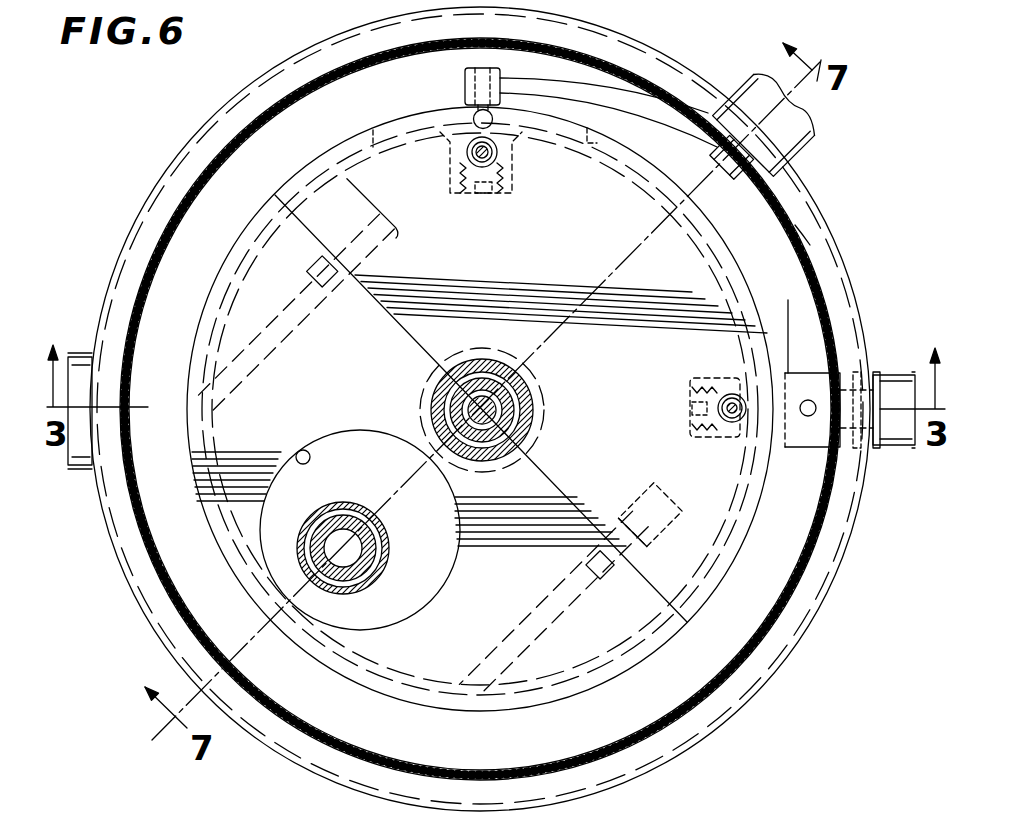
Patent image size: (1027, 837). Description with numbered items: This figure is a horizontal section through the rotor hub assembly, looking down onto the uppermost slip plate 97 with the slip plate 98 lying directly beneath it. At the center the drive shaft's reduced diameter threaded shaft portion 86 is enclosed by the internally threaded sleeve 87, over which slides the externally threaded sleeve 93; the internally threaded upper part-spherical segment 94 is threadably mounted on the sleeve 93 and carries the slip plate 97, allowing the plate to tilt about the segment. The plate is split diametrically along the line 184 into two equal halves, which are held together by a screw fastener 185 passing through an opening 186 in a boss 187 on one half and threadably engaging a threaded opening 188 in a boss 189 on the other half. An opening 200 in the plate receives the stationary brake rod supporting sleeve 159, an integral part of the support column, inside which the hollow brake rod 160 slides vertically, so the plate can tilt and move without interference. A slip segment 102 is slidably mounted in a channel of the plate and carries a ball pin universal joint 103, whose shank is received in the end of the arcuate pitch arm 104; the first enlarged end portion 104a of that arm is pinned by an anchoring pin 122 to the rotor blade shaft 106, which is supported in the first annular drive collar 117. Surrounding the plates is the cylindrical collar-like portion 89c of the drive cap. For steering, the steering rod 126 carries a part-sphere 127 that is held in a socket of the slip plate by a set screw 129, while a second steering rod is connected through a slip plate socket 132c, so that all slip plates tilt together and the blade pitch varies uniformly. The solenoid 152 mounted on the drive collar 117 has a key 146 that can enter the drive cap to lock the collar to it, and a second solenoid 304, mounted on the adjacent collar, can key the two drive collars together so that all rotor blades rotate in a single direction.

The threaded shaft portion 86 is at (527, 392).
The internally threaded sleeve 87 is at (510, 377).
The externally threaded sleeve 93 is at (470, 373).
The upper part-spherical segment 94 is at (527, 417).
The slip plate 97 is at (428, 836).
The slip plate 98 is at (717, 592).
The slip segment 102 is at (632, 108).
The universal joint 103 is at (467, 118).
The arcuate pitch arm 104 is at (812, 140).
The first enlarged end portion 104a is at (815, 377).
The rotor blade shaft 106 is at (897, 423).
The first annular drive collar 117 is at (848, 257).
The anchoring pin 122 is at (808, 417).
The steering rod 126 is at (725, 400).
The part-sphere 127 is at (733, 447).
The set screw 129 is at (692, 408).
The slip plate socket 132c is at (510, 178).
The key 146 is at (726, 178).
The solenoid 152 is at (754, 68).
The brake rod supporting sleeve 159 is at (355, 522).
The brake rod 160 is at (383, 532).
The split line 184 is at (400, 315).
The screw fastener 185 is at (590, 568).
The opening 186 is at (562, 600).
The boss 187 is at (609, 618).
The threaded opening 188 is at (637, 517).
The boss 189 is at (672, 550).
The opening 200 is at (301, 450).
The solenoid 304 is at (82, 470).
The collar-like portion 89c is at (800, 230).